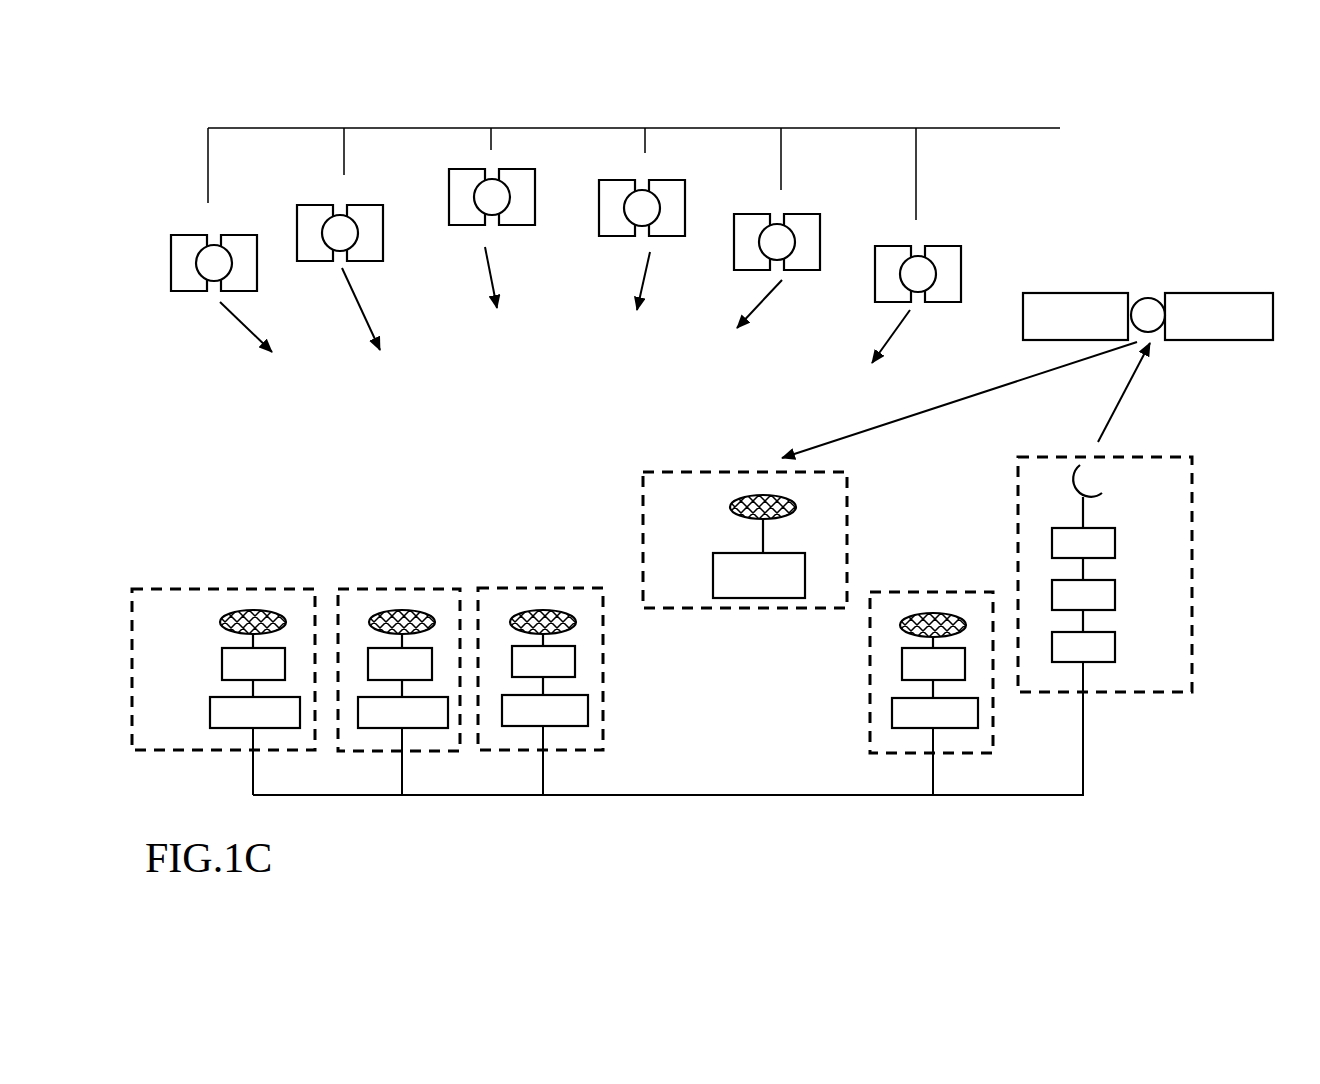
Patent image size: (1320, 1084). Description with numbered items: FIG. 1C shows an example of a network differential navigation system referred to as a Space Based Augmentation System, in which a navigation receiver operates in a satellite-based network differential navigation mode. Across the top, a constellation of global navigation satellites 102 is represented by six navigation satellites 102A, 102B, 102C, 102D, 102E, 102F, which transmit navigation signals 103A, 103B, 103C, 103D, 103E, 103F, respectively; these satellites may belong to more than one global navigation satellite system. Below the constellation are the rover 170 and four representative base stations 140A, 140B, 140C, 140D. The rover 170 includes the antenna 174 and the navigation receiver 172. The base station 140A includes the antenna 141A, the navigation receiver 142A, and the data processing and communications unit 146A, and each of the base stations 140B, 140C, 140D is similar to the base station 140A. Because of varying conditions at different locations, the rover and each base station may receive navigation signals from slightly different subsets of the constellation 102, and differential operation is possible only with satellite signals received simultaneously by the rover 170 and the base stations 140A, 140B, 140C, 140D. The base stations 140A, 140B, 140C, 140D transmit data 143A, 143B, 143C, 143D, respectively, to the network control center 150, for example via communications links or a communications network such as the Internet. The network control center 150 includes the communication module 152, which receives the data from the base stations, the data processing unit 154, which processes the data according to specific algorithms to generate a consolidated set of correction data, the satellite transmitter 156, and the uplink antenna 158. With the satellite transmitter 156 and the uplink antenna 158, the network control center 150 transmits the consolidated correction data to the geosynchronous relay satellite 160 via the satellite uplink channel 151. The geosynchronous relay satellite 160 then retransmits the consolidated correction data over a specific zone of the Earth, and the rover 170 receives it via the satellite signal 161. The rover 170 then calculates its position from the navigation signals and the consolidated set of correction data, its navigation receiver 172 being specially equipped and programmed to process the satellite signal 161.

The constellation of global navigation satellites 102 is at (639, 215).
The navigation satellite 102A is at (214, 250).
The navigation satellite 102B is at (340, 222).
The navigation satellite 102C is at (492, 185).
The navigation satellite 102D is at (642, 194).
The navigation satellite 102E is at (777, 230).
The navigation satellite 102F is at (918, 263).
The navigation signal 103A is at (227, 329).
The navigation signal 103B is at (384, 309).
The navigation signal 103C is at (520, 277).
The navigation signal 103D is at (670, 281).
The navigation signal 103E is at (782, 304).
The navigation signal 103F is at (918, 336).
The geosynchronous relay satellite 160 is at (1148, 299).
The satellite signal 161 is at (959, 400).
The satellite uplink channel 151 is at (1135, 392).
The rover 170 is at (745, 522).
The antenna 174 is at (731, 524).
The navigation receiver 172 is at (730, 575).
The base station 140A is at (223, 652).
The base station 140B is at (399, 652).
The base station 140C is at (540, 649).
The base station 140D is at (931, 659).
The antenna 141A is at (222, 629).
The navigation receiver 142A is at (216, 672).
The data processing and communications unit 146A is at (223, 712).
The data 143A is at (286, 761).
The data 143B is at (441, 761).
The data 143C is at (580, 760).
The data 143D is at (966, 761).
The network control center 150 is at (1105, 595).
The uplink antenna 158 is at (1116, 496).
The satellite transmitter 156 is at (1106, 554).
The data processing unit 154 is at (1106, 606).
The communication module 152 is at (1107, 647).